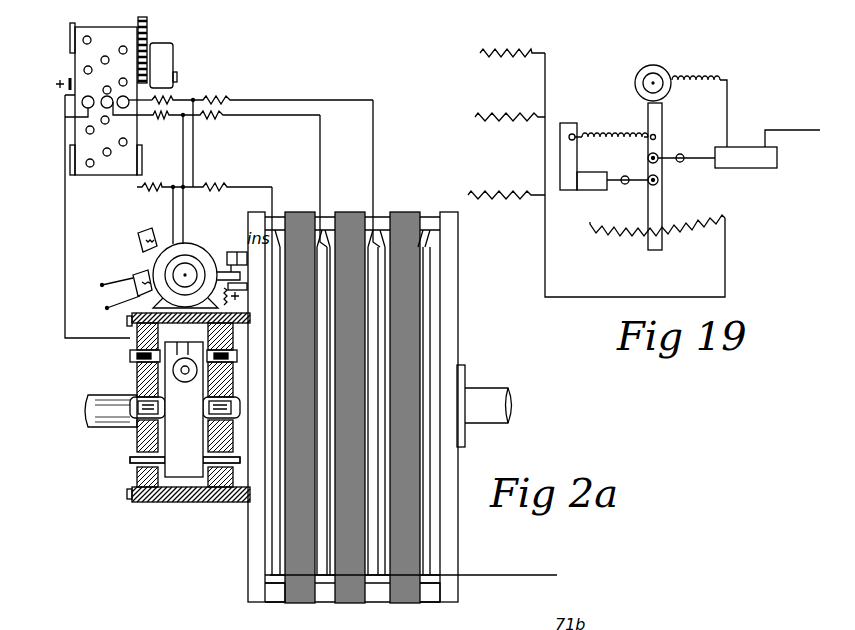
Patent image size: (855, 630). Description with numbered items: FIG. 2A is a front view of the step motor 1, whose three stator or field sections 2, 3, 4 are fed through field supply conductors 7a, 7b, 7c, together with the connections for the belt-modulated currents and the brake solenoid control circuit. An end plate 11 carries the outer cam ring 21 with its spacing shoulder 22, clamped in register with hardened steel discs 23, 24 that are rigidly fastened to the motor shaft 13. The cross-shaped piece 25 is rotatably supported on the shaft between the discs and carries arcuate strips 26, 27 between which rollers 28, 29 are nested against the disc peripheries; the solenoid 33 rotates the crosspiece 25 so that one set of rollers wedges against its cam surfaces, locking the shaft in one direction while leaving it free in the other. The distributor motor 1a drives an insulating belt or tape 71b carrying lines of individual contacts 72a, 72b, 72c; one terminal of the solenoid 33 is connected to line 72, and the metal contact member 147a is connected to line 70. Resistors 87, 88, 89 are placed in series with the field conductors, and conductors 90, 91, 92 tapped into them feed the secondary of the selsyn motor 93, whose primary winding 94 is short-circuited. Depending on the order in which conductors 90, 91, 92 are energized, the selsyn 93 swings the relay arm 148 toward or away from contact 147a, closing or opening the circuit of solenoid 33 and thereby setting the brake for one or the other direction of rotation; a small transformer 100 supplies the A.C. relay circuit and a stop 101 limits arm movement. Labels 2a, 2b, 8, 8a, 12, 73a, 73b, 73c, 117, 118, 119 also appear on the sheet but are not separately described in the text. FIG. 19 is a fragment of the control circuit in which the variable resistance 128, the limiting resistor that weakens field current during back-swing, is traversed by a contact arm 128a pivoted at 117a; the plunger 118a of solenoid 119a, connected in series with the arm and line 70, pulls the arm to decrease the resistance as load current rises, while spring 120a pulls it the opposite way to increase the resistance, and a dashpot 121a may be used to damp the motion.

In FIG. 2A, the motor 1 is at (458, 310).
In FIG. 2A, the motor 1a is at (174, 46).
In FIG. 2A, the stator or field section 2 is at (308, 603).
In FIG. 2A, the terminal panel 2a is at (75, 27).
In FIG. 2A, the panel lead 2b is at (75, 176).
In FIG. 2A, the stator or field section 3 is at (355, 603).
In FIG. 2A, the stator or field section 4 is at (405, 603).
In FIG. 2A, the field supply conductor 7a is at (249, 186).
In FIG. 2A, the field supply conductor 7b is at (322, 142).
In FIG. 2A, the field supply conductor 7c is at (374, 142).
In FIG. 2A, the core yoke 8 is at (278, 214).
In FIG. 2A, the yoke end piece 8a is at (282, 603).
In FIG. 2A, the end plate 11 is at (248, 556).
In FIG. 2A, the bearing plate 12 is at (467, 366).
In FIG. 2A, the motor shaft 13 is at (495, 388).
In FIG. 2A, the outer cam ring 21 is at (150, 502).
In FIG. 2A, the spacing shoulder 22 is at (185, 502).
In FIG. 2A, the hardened steel disc 23 is at (236, 438).
In FIG. 2A, the hardened steel disc 24 is at (137, 439).
In FIG. 2A, the cross-shaped piece 25 is at (185, 478).
In FIG. 2A, the arcuate strips 26 is at (130, 462).
In FIG. 2A, the arcuate strips 27 is at (238, 358).
In FIG. 2A, the rollers 28 is at (136, 469).
In FIG. 2A, the rollers 29 is at (238, 347).
In FIG. 2A, the solenoid 33 is at (165, 372).
In FIG. 2A, the line 70 is at (528, 569).
In FIG. 19, the line 70 is at (795, 130).
In FIG. 2A, the belt or tape 71b is at (137, 133).
In FIG. 2A, the line 72 is at (65, 79).
In FIG. 2A, the contacts 72a is at (90, 167).
In FIG. 2A, the contacts 72b is at (107, 156).
In FIG. 2A, the contacts 72c is at (123, 146).
In FIG. 2A, the terminal 73a is at (87, 95).
In FIG. 2A, the terminal 73b is at (116, 86).
In FIG. 2A, the terminal 73c is at (134, 93).
In FIG. 2A, the resistor 87 is at (215, 186).
In FIG. 2A, the resistor 88 is at (215, 118).
In FIG. 2A, the resistor 89 is at (210, 97).
In FIG. 2A, the conductor 90 is at (172, 215).
In FIG. 2A, the conductor 91 is at (185, 200).
In FIG. 2A, the conductor 92 is at (201, 143).
In FIG. 2A, the selsyn motor 93 is at (155, 268).
In FIG. 2A, the field or primary winding 94 is at (143, 237).
In FIG. 2A, the transformer 100 is at (127, 285).
In FIG. 2A, the stop 101 is at (239, 296).
In FIG. 2A, the metal contact member 147a is at (231, 252).
In FIG. 2A, the contact arm 148 is at (221, 252).
In FIG. 19, the resistor 117 is at (528, 49).
In FIG. 19, the resistor 118 is at (525, 113).
In FIG. 19, the resistor 119 is at (523, 190).
In FIG. 19, the pivot 117a is at (655, 70).
In FIG. 19, the plunger 118a is at (693, 152).
In FIG. 19, the solenoid 119a is at (740, 146).
In FIG. 19, the spring 120a is at (620, 125).
In FIG. 19, the dashpot 121a is at (590, 191).
In FIG. 19, the variable resistance 128 is at (604, 237).
In FIG. 19, the contact arm 128a is at (663, 212).